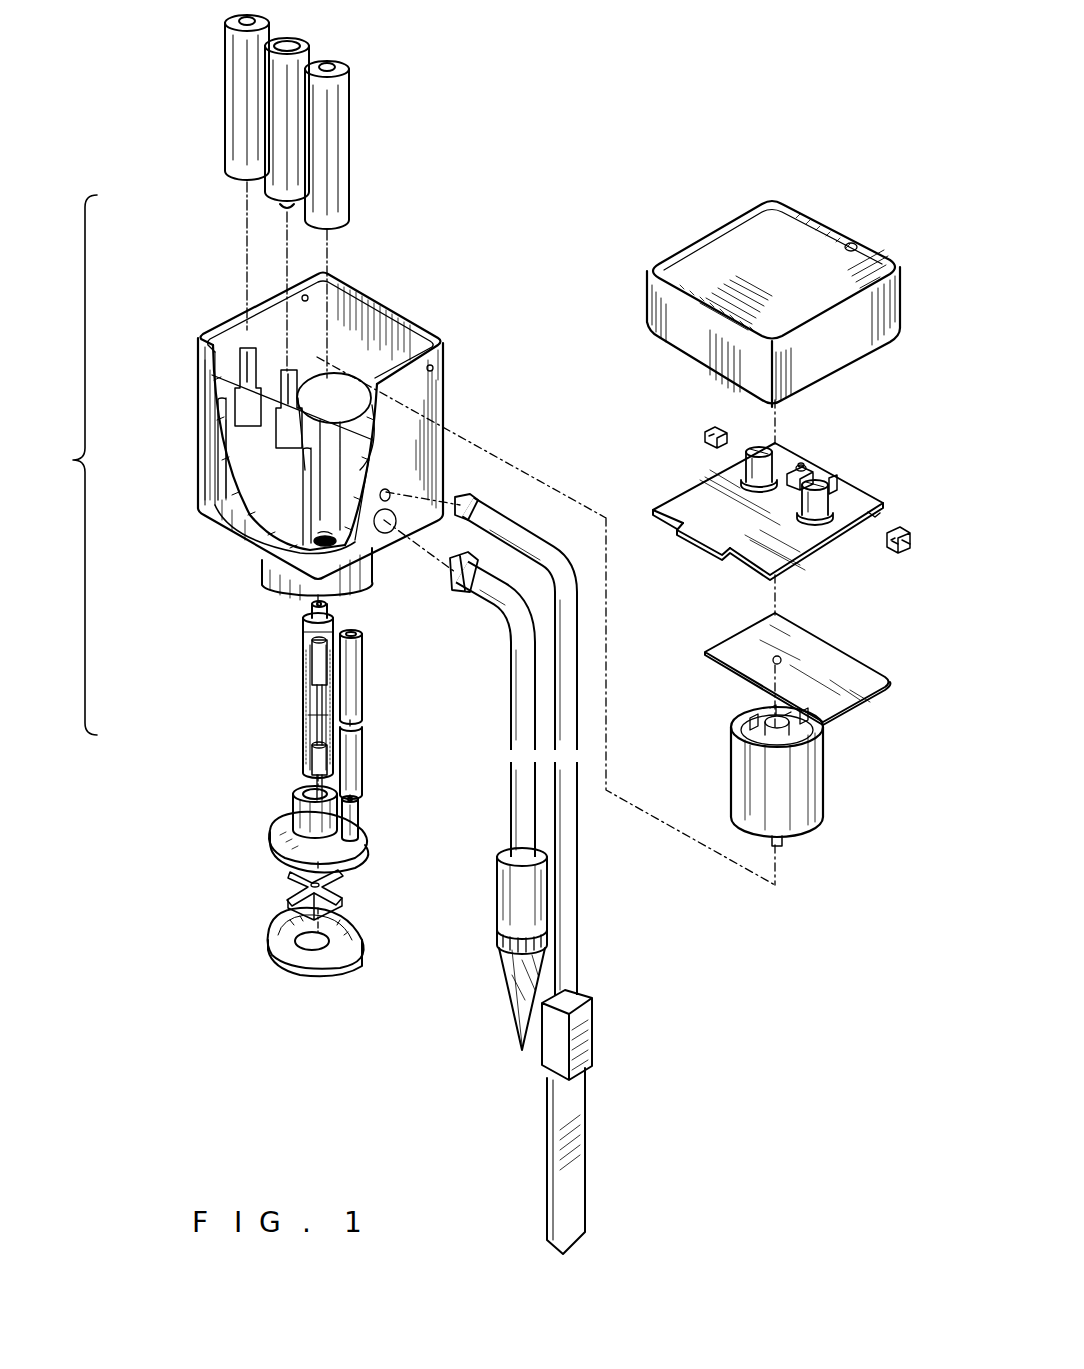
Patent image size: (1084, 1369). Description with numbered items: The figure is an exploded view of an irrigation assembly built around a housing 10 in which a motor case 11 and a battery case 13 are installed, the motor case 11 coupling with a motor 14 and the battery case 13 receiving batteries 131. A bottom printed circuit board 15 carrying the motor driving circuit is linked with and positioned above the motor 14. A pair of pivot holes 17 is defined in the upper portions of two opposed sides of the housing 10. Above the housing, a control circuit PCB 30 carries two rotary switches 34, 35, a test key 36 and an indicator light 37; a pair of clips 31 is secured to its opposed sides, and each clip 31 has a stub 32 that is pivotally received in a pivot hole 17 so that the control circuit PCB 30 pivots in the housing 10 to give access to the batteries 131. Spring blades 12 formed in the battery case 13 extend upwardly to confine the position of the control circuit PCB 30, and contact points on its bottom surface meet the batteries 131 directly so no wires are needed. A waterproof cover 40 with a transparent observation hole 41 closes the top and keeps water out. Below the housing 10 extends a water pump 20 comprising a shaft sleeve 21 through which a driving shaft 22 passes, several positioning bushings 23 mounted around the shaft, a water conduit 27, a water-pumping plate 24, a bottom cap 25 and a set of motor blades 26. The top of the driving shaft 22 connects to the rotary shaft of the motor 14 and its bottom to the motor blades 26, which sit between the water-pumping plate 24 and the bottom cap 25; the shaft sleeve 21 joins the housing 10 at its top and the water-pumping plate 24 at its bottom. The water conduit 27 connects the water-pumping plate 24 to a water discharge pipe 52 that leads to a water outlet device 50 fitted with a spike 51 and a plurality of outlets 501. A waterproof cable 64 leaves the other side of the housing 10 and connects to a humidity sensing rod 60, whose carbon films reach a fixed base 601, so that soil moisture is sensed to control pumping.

The housing 10 is at (486, 577).
The motor case 11 is at (345, 380).
The spring blades 12 is at (243, 375).
The battery case 13 is at (328, 497).
The motor 14 is at (752, 771).
The bottom printed circuit board 15 is at (855, 688).
The pivot holes 17 is at (308, 298).
The water pump 20 is at (235, 795).
The shaft sleeve 21 is at (308, 632).
The driving shaft 22 is at (318, 695).
The positioning bushings 23 is at (318, 676).
The water-pumping plate 24 is at (280, 816).
The bottom cap 25 is at (298, 961).
The motor blades 26 is at (345, 881).
The water conduit 27 is at (355, 678).
The control circuit PCB 30 is at (712, 545).
The clips 31 is at (705, 435).
The stub 32 is at (912, 546).
The rotary switch 34 is at (818, 507).
The rotary switch 35 is at (752, 468).
The test key 36 is at (802, 466).
The indicator light 37 is at (836, 479).
The waterproof cover 40 is at (718, 250).
The transparent observation hole 41 is at (856, 246).
The water outlet device 50 is at (505, 878).
The spike 51 is at (508, 983).
The water discharge pipe 52 is at (513, 688).
The humidity sensing rod 60 is at (588, 1153).
The waterproof cable 64 is at (568, 646).
The batteries 131 is at (340, 93).
The outlets 501 is at (498, 934).
The fixed base 601 is at (602, 1018).